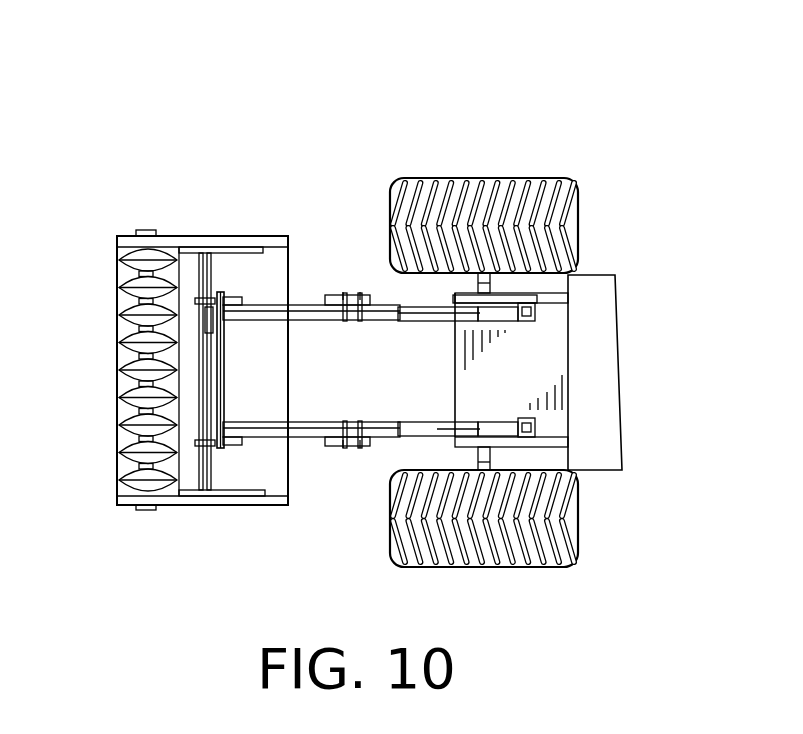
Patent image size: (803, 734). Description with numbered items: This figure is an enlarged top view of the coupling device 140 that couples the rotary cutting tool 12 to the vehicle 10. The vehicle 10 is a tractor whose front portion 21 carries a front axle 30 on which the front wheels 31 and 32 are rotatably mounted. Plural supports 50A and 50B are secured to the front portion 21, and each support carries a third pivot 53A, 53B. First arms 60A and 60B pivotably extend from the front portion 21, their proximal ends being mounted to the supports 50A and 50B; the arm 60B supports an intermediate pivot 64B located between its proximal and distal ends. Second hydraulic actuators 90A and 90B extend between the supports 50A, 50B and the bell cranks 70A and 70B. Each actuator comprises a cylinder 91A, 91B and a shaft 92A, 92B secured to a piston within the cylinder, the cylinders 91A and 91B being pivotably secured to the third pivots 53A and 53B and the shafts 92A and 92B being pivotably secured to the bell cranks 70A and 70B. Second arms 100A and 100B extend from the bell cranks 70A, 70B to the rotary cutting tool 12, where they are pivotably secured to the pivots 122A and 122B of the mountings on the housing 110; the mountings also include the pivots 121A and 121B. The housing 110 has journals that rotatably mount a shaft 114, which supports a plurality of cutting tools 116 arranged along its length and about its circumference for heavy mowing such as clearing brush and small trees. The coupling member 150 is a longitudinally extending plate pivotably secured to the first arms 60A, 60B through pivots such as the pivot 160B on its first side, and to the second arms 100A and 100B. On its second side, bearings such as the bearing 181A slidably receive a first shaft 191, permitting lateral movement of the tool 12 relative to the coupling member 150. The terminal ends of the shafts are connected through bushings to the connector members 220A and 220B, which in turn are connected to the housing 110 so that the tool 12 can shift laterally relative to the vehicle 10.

The vehicle 10 is at (654, 150).
The rotary cutting tool 12 is at (118, 400).
The front portion 21 is at (522, 442).
The front axle 30 is at (484, 470).
The front wheel 31 is at (544, 560).
The front wheel 32 is at (490, 317).
The support 50A is at (553, 442).
The support 50B is at (535, 323).
The third pivot 53A is at (533, 425).
The third pivot 53B is at (465, 328).
The arm 60A is at (400, 440).
The arm 60B is at (460, 313).
The pivot 64B is at (385, 302).
The bell crank 70A is at (307, 433).
The bell crank 70B is at (380, 303).
The second hydraulic actuator 90A is at (375, 438).
The second hydraulic actuator 90B is at (527, 300).
The cylinder 91A is at (470, 430).
The cylinder 91B is at (530, 307).
The shaft 92A is at (345, 445).
The shaft 92B is at (423, 313).
The second arm 100A is at (263, 437).
The second arm 100B is at (325, 298).
The housing 110 is at (122, 506).
The shaft 114 is at (119, 275).
The cutting tools 116 is at (119, 265).
The pivot 121A is at (204, 497).
The pivot 121B is at (232, 297).
The pivot 122A is at (248, 256).
The pivot 122B is at (152, 222).
The coupling device 140 is at (213, 103).
The coupling member 150 is at (218, 367).
The pivot 160B is at (231, 292).
The bearing 181A is at (213, 300).
The first shaft 191 is at (202, 335).
The connector member 220A is at (311, 409).
The connector member 220B is at (311, 339).